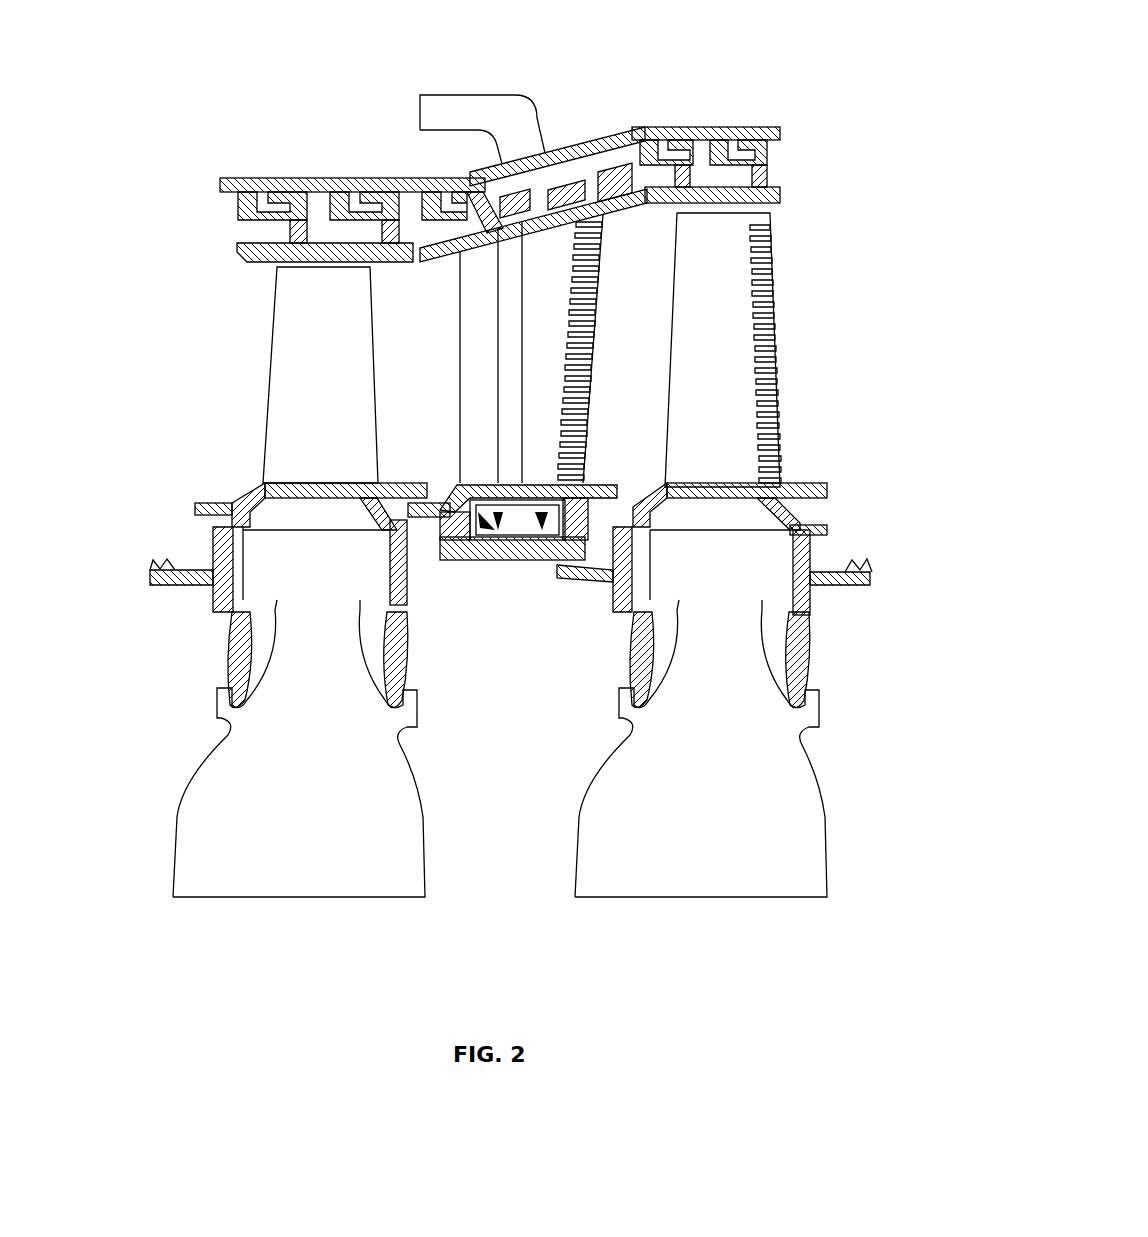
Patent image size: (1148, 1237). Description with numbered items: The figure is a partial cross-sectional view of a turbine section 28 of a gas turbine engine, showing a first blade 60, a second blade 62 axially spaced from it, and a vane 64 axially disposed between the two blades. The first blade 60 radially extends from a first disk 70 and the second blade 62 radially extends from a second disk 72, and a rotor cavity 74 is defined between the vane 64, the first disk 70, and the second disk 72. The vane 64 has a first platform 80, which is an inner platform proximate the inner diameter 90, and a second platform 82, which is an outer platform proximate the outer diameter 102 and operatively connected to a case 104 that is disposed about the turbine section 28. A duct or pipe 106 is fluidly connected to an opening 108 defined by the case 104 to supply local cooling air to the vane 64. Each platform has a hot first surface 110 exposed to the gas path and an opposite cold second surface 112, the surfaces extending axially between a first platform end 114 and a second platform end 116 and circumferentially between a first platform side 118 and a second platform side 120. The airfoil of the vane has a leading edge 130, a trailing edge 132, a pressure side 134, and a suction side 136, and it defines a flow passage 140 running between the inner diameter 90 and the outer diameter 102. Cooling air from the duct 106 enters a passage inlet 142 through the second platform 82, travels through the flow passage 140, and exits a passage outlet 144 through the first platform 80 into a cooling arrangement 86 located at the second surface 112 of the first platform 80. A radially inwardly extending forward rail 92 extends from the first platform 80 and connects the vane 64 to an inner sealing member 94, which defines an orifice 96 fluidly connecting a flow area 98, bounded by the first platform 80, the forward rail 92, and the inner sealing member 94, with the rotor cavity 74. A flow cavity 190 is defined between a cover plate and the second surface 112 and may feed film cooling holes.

The turbine section 28 is at (205, 40).
The first blade 60 is at (255, 410).
The second blade 62 is at (795, 385).
The vane 64 is at (515, 345).
The first disk 70 is at (162, 872).
The second disk 72 is at (835, 872).
The rotor cavity 74 is at (428, 752).
The first platform 80 is at (620, 490).
The second platform 82 is at (645, 208).
The cooling arrangement 86 is at (505, 530).
The inner diameter 90 is at (302, 533).
The radially inwardly extending forward rail 92 is at (420, 522).
The inner sealing member 94 is at (425, 547).
The orifice 96 is at (530, 538).
The flow area 98 is at (480, 535).
The outer diameter 102 is at (352, 240).
The case 104 is at (722, 126).
The duct or pipe 106 is at (499, 174).
The opening 108 is at (540, 150).
The first surface 110 is at (542, 502).
The second surface 112 is at (553, 565).
The first platform end 114 is at (425, 262).
The second platform end 116 is at (632, 140).
The first platform side 118 is at (560, 210).
The second platform side 120 is at (565, 238).
The leading edge 130 is at (462, 420).
The trailing edge 132 is at (605, 295).
The pressure side 134 is at (478, 373).
The suction side 136 is at (468, 392).
The flow passage 140 is at (528, 365).
The passage inlet 142 is at (483, 222).
The passage outlet 144 is at (530, 485).
The flow cavity 190 is at (600, 497).